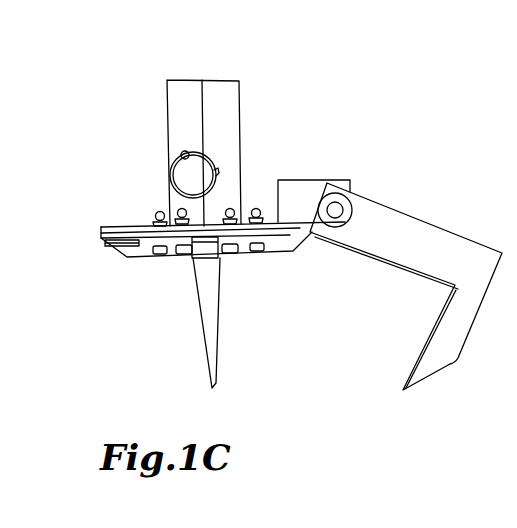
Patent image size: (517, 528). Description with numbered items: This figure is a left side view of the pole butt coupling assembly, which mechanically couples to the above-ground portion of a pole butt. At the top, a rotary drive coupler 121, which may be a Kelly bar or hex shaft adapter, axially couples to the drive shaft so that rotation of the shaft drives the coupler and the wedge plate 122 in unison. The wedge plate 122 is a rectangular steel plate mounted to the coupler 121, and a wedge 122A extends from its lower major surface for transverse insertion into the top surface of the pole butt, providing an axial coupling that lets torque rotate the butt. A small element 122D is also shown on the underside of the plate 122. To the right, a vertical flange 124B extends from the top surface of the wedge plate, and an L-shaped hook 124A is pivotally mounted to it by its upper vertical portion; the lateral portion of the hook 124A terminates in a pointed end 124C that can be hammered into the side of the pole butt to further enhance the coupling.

The rotary drive coupler 121 is at (225, 80).
The wedge plate 122 is at (119, 227).
The clip 122D is at (110, 245).
The wedge 122A is at (213, 315).
The vertical flange 124B is at (338, 175).
The L-shaped hook 124A is at (378, 204).
The pointed end 124C is at (435, 362).